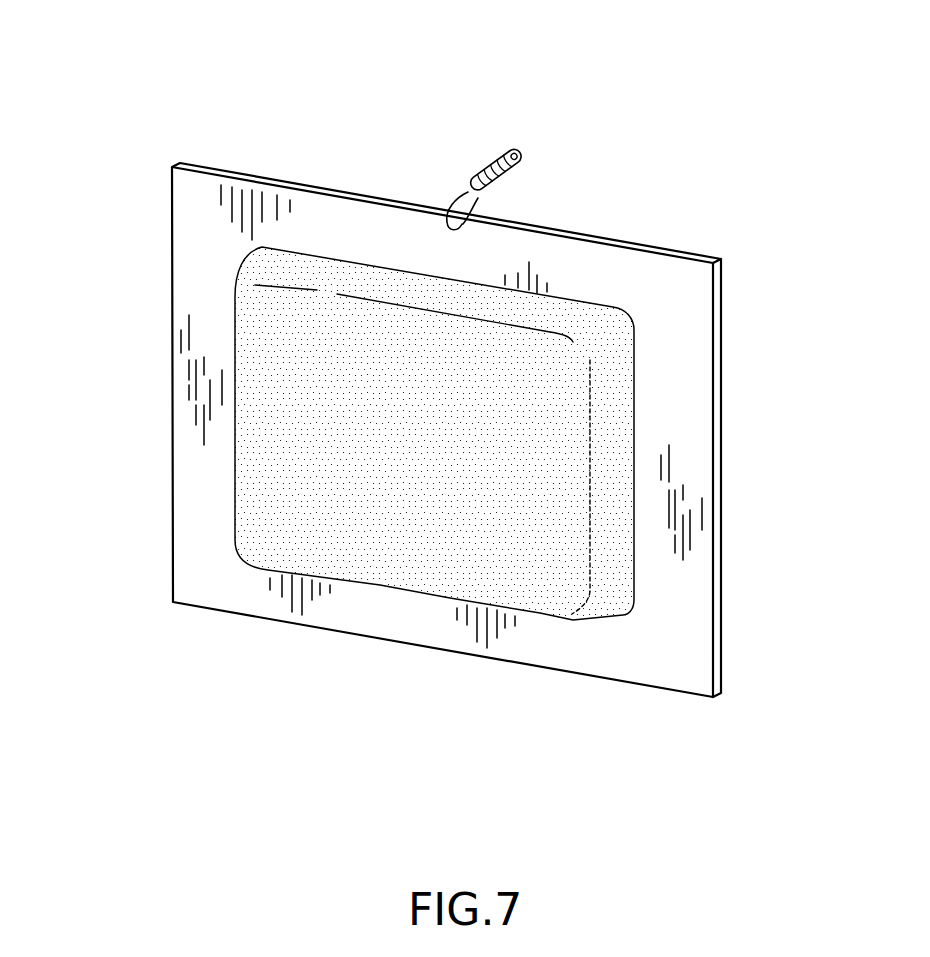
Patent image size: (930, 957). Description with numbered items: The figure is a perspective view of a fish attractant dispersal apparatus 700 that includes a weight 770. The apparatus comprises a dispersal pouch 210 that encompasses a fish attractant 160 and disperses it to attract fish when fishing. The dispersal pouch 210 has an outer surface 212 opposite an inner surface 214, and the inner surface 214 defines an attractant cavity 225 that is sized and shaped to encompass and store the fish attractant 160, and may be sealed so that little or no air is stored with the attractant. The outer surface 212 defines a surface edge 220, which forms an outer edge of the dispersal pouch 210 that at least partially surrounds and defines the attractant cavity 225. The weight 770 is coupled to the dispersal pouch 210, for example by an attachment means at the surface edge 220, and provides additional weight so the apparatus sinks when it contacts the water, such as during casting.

The dressing assembly 700 is at (205, 106).
The dispersal pouch 210 is at (134, 288).
The surface edge 220 is at (685, 275).
The inner surface 214 is at (402, 583).
The attractant cavity 225 is at (464, 583).
The fish attractant 160 is at (577, 432).
The outer surface 212 is at (288, 600).
The weight 770 is at (518, 150).